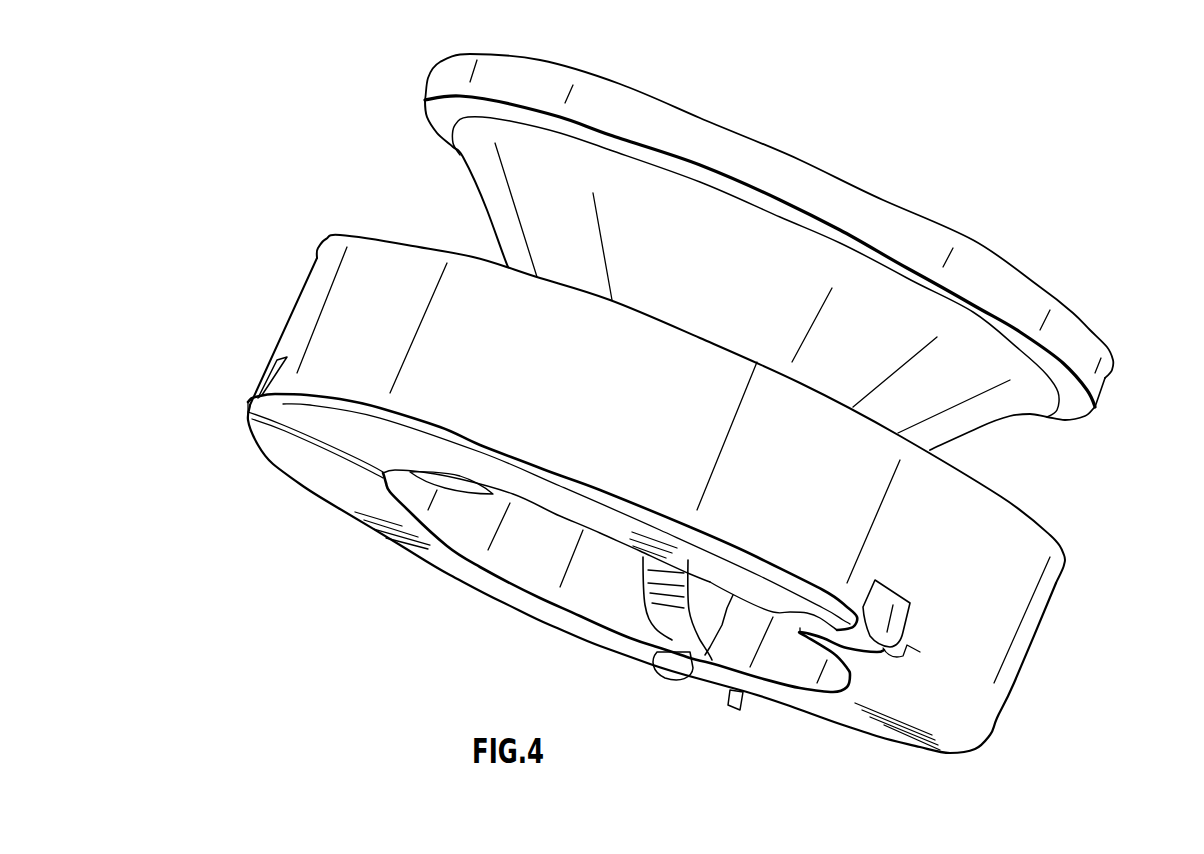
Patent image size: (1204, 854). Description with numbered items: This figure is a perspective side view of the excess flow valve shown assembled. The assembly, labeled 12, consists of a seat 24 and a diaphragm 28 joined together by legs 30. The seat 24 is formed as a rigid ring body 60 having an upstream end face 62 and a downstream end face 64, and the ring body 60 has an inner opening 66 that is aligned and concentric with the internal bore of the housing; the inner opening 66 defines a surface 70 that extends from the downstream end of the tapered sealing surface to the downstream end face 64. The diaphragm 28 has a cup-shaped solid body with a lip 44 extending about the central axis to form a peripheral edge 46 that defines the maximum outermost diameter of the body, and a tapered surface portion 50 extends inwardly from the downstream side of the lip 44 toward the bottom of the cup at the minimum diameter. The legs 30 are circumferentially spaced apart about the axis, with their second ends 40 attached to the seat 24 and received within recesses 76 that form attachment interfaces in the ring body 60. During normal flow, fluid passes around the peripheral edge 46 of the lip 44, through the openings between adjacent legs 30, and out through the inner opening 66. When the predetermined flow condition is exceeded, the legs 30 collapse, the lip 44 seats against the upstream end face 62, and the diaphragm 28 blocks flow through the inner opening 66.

The container assembly 12 is at (1056, 115).
The seat 24 is at (1012, 683).
The diaphragm 28 is at (803, 247).
The legs 30 is at (653, 593).
The second end 40 is at (880, 616).
The lip 44 is at (1105, 378).
The peripheral edge 46 is at (440, 81).
The tapered surface portion 50 is at (975, 418).
The ring body 60 is at (1017, 550).
The upstream end face 62 is at (361, 238).
The downstream end face 64 is at (340, 495).
The inner opening 66 is at (797, 686).
The surface 70 is at (510, 560).
The recesses 76 is at (268, 385).